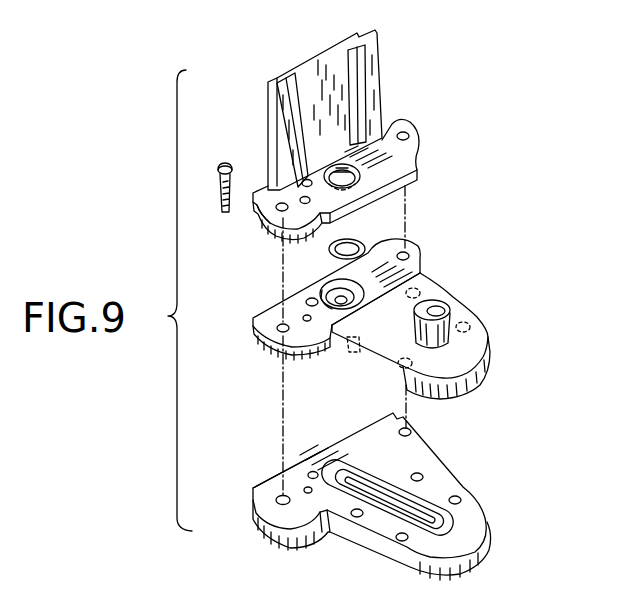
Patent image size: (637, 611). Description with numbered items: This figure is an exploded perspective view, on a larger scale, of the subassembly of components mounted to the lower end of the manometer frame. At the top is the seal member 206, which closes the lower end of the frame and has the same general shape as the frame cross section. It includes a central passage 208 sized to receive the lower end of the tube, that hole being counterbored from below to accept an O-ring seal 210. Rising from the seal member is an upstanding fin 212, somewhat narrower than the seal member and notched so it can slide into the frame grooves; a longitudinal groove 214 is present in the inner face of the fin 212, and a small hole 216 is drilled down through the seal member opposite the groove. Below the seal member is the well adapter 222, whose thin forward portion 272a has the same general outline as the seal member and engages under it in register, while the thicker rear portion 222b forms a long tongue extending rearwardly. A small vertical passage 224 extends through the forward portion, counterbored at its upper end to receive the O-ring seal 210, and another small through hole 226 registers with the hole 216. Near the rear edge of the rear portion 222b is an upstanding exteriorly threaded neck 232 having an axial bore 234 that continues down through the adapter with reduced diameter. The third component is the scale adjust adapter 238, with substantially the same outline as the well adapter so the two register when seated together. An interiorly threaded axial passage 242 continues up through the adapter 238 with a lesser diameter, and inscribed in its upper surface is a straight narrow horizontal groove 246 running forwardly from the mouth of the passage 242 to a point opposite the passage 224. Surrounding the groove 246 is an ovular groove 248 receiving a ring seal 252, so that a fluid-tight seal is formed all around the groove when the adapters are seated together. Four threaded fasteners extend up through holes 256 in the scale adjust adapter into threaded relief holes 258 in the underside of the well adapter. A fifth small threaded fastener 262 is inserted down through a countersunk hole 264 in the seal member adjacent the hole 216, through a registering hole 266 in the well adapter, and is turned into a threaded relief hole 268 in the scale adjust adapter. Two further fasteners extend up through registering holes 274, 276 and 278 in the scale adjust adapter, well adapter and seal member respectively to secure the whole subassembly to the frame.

The seal member 206 is at (420, 147).
The central passage 208 is at (418, 171).
The O-ring seal 210 is at (375, 243).
The upstanding fin 212 is at (375, 50).
The longitudinal groove 214 is at (298, 75).
The small hole 216 is at (303, 181).
The well adapter 222 is at (343, 353).
The rear portion of well adapter 222b is at (480, 380).
The vertical passage 224 is at (333, 300).
The through hole 226 is at (305, 300).
The threaded neck 232 is at (489, 350).
The axial bore 234 is at (455, 328).
The scale adjust adapter 238 is at (483, 563).
The axial passage 242 is at (452, 528).
The horizontal groove 246 is at (470, 512).
The ovular groove 248 is at (392, 512).
The ring seal 252 is at (408, 556).
The holes 256 is at (456, 494).
The threaded relief holes 258 is at (470, 322).
The small threaded fastener 262 is at (221, 207).
The countersunk hole 264 is at (262, 215).
The registering hole 266 is at (302, 318).
The threaded relief hole 268 is at (280, 496).
The thin plate portion 272a is at (270, 345).
The holes 274 is at (276, 490).
The holes 276 is at (277, 328).
The holes 278 is at (408, 135).